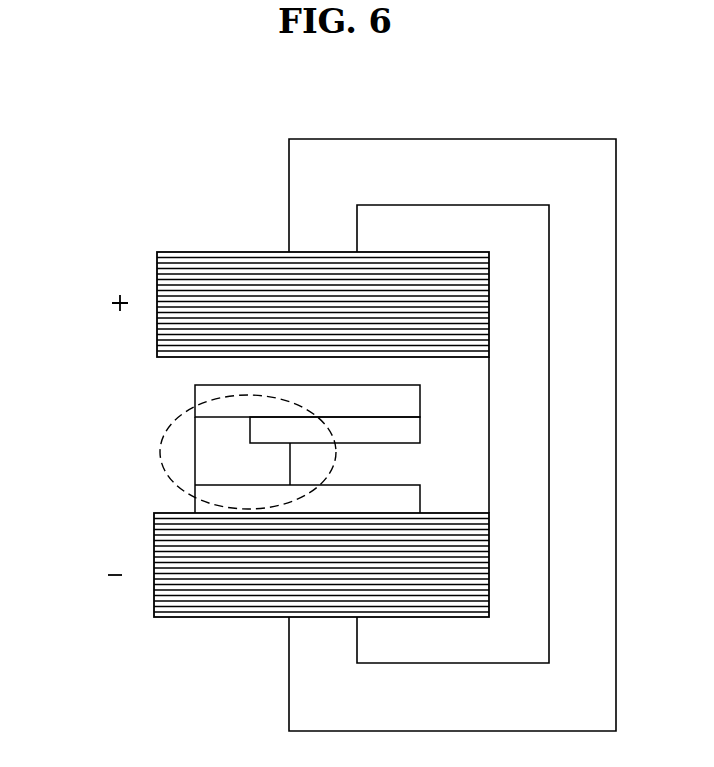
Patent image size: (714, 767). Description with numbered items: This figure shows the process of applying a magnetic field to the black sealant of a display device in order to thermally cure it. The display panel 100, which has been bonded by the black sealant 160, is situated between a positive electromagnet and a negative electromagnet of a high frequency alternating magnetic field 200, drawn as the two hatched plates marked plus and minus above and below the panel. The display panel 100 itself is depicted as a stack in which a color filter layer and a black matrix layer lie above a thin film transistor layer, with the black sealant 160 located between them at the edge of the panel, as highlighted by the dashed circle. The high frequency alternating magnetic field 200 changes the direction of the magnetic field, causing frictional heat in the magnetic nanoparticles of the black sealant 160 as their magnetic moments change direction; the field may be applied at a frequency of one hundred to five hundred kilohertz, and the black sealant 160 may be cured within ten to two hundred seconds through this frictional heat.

The display panel 100 is at (235, 449).
The black sealant 160 is at (203, 466).
The high frequency alternating magnetic field 200 is at (208, 232).